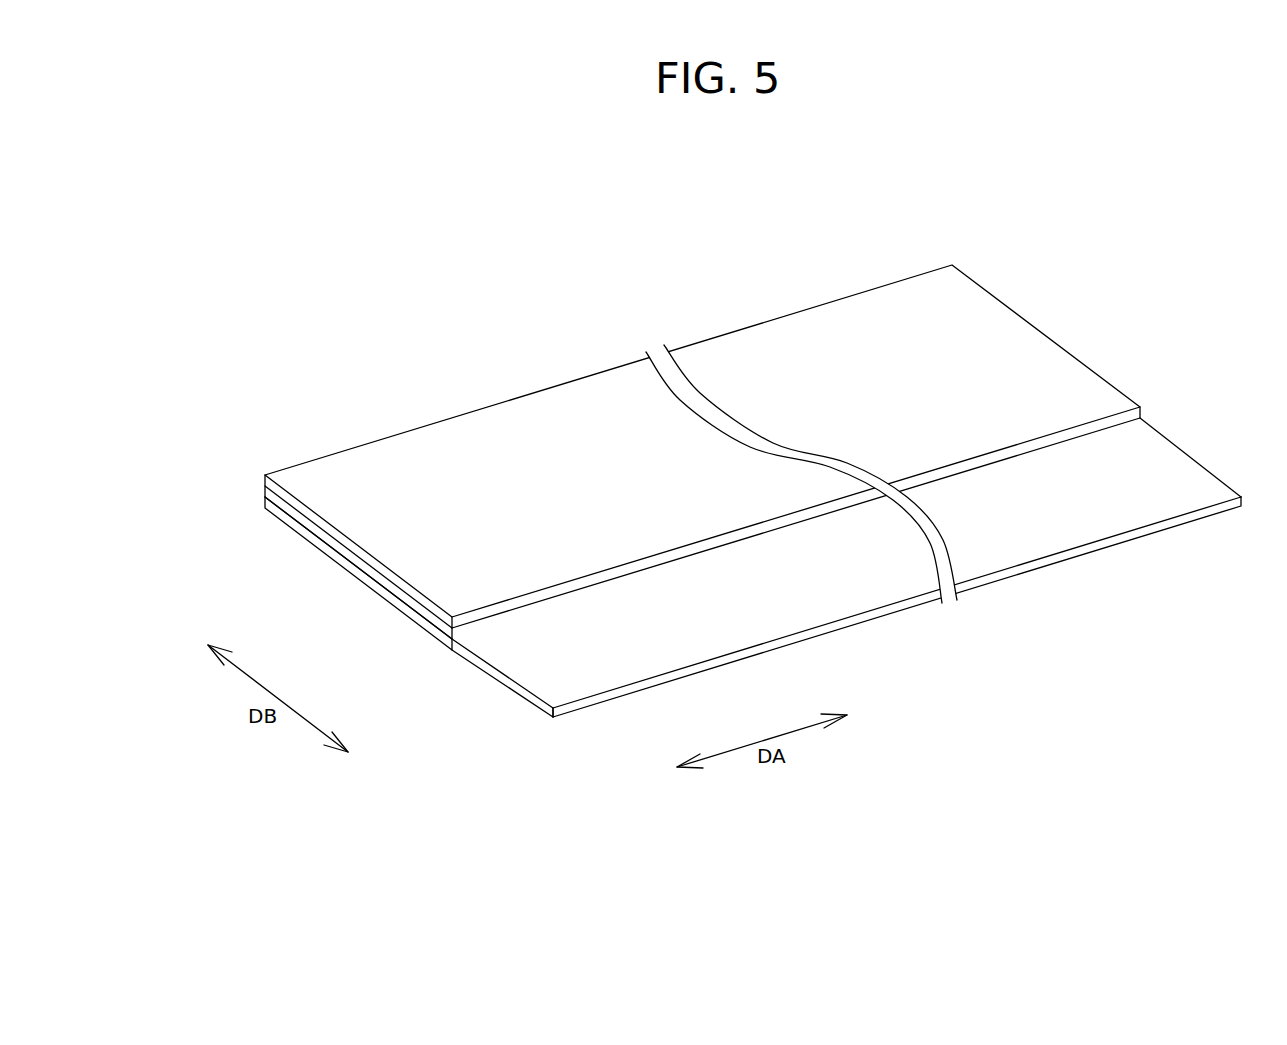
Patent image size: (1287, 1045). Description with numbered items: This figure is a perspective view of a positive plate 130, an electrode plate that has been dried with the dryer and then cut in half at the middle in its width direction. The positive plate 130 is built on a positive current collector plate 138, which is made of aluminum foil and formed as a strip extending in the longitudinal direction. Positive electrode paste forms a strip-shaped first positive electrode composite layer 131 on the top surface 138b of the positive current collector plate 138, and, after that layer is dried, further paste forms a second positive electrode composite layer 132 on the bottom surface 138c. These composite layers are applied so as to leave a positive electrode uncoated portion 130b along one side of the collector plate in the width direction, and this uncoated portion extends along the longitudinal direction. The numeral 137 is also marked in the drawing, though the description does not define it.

The positive plate 130 is at (696, 284).
The positive electrode uncoated portion 130b is at (1167, 463).
The first positive electrode composite layer 131 is at (317, 487).
The second positive electrode composite layer 132 is at (293, 534).
The intermediate layer 137 is at (492, 565).
The positive current collector plate 138 is at (527, 665).
The top surface 138b is at (563, 673).
The bottom surface 138c is at (547, 710).